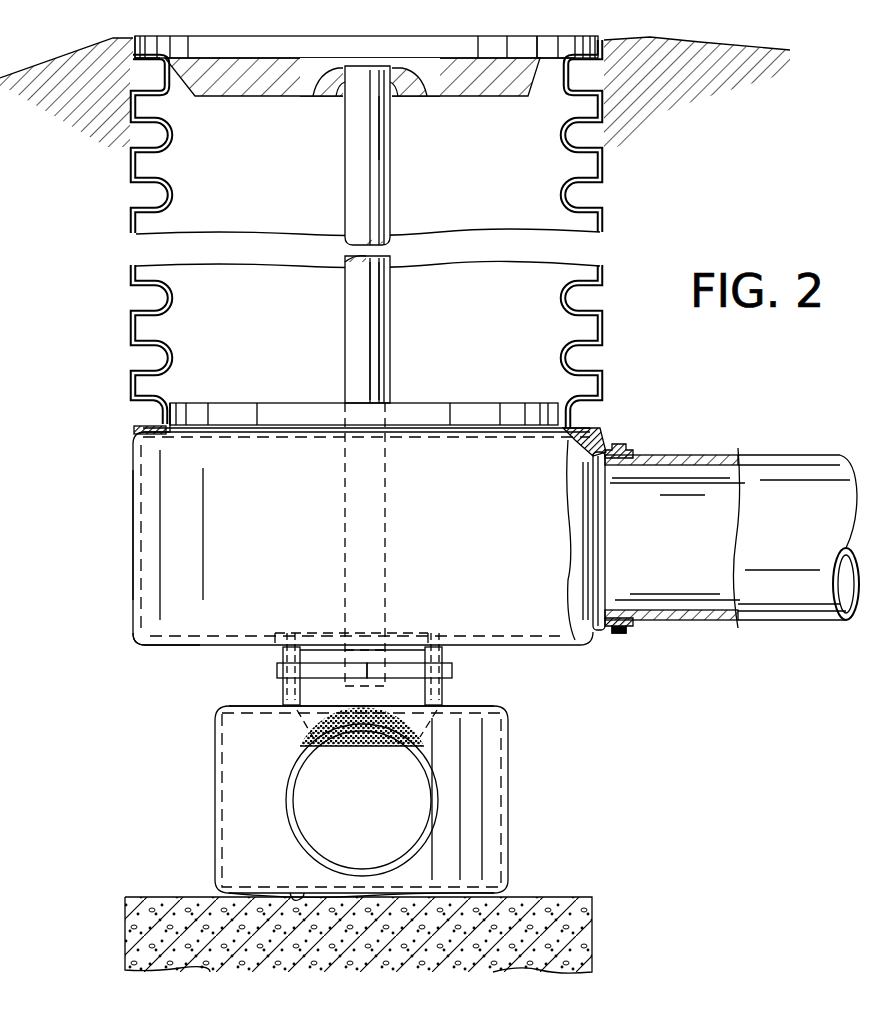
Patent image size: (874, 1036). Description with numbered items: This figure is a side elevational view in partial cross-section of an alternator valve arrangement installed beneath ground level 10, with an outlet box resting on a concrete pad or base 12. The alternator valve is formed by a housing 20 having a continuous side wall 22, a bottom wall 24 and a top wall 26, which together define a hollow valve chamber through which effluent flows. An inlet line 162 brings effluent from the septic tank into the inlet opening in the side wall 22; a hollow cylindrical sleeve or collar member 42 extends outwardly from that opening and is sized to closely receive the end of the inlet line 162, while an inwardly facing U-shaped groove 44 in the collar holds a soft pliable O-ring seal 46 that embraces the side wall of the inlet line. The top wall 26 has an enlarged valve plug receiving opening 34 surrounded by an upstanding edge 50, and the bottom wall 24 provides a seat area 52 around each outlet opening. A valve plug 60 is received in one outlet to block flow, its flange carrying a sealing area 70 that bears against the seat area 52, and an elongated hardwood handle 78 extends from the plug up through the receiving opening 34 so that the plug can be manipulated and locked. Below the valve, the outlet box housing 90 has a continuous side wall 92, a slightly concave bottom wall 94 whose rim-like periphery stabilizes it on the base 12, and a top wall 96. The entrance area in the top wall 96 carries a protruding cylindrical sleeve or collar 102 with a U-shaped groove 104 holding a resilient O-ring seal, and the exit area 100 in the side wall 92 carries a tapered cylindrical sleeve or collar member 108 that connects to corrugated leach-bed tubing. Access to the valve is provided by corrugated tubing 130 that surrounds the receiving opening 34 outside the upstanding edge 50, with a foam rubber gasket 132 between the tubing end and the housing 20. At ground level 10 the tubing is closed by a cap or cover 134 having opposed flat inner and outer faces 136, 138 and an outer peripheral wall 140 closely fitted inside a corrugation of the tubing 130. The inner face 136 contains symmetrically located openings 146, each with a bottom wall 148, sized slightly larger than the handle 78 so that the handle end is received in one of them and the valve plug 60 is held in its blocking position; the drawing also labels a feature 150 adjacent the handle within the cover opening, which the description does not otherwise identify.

The ground level 10 is at (645, 40).
The concrete pad or base 12 is at (594, 918).
The housing 20 is at (132, 568).
The side wall 22 is at (132, 520).
The bottom wall 24 is at (148, 645).
The top wall 26 is at (592, 462).
The valve plug receiving opening 34 is at (399, 398).
The cylindrical sleeve or collar member 42 is at (617, 444).
The U-shaped groove 44 is at (640, 634).
The O-ring seal 46 is at (625, 634).
The upstanding edge 50 is at (158, 408).
The seat area 52 is at (258, 653).
The valve plug 60 is at (398, 618).
The sealing area 70 is at (268, 640).
The handle 78 is at (378, 333).
The outlet box housing 90 is at (210, 790).
The side wall 92 is at (510, 810).
The bottom wall 94 is at (298, 893).
The top wall 96 is at (460, 706).
The exit area 100 is at (378, 839).
The cylindrical sleeve or collar 102 is at (282, 688).
The U-shaped groove 104 is at (452, 672).
The cylindrical sleeve or collar member 108 is at (440, 788).
The corrugated tubing 130 is at (604, 170).
The gasket 132 is at (148, 427).
The cap or cover 134 is at (529, 38).
The inner face 136 is at (247, 87).
The outer face 138 is at (288, 36).
The outer peripheral wall 140 is at (231, 21).
The holes or openings 146 is at (345, 96).
The bottom wall 148 is at (347, 76).
The bolt shank 150 is at (378, 86).
The inlet line 162 is at (697, 455).